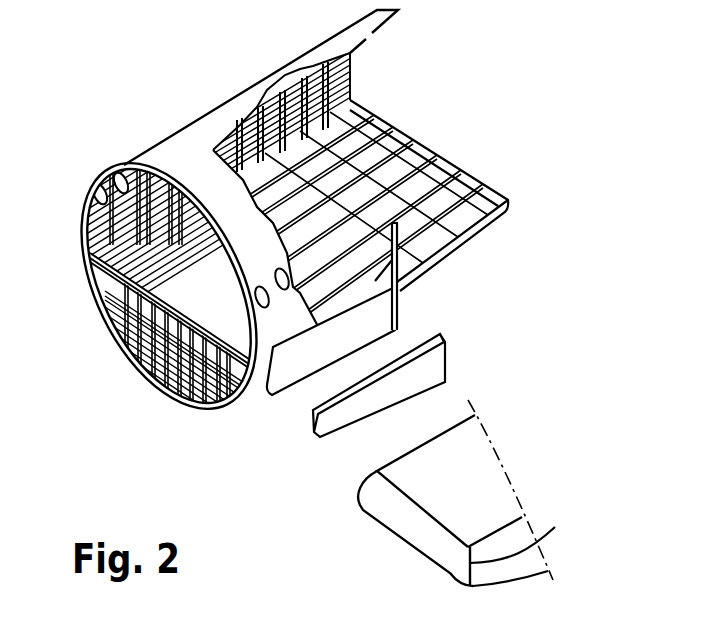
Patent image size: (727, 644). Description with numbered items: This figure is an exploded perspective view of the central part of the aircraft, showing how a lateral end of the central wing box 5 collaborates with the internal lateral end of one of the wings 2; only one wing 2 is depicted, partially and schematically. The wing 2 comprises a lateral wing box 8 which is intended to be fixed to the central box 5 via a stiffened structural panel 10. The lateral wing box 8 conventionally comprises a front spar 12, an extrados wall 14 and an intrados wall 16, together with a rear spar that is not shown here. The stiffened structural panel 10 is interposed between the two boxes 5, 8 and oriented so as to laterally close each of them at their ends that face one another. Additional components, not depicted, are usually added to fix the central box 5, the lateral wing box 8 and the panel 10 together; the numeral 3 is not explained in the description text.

The drum 3 is at (182, 147).
The central wing box 5 is at (397, 307).
The stiffened structural panel 10 is at (448, 347).
The lateral wing box 8 is at (474, 452).
The wing 2 is at (364, 509).
The extrados wall 14 is at (487, 503).
The front spar 12 is at (517, 540).
The intrados wall 16 is at (520, 580).